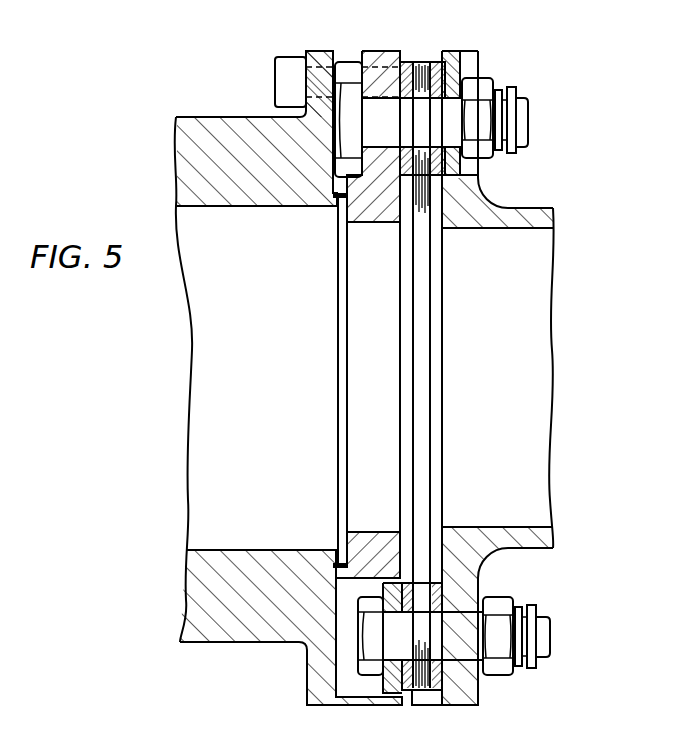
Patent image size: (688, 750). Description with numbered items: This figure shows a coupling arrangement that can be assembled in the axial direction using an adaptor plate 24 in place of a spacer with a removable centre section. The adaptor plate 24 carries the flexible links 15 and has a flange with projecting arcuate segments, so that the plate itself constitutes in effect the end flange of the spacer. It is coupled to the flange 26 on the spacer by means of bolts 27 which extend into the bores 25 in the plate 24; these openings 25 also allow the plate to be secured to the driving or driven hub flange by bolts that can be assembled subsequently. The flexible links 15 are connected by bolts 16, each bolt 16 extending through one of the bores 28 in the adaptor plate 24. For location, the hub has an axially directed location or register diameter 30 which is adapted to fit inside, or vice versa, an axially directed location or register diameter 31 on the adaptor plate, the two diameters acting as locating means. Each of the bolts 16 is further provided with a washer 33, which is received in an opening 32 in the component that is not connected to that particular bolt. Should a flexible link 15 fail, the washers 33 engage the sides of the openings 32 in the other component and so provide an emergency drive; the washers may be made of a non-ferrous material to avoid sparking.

The flexible link 15 is at (429, 72).
The bolt 16 is at (444, 127).
The adaptor plate 24 is at (405, 47).
The opening 25 is at (378, 67).
The flange 26 is at (316, 53).
The bolt 27 is at (287, 73).
The bore 28 is at (372, 97).
The register diameter 30 is at (337, 210).
The register diameter 31 is at (333, 562).
The opening 32 is at (479, 175).
The washer 33 is at (451, 68).